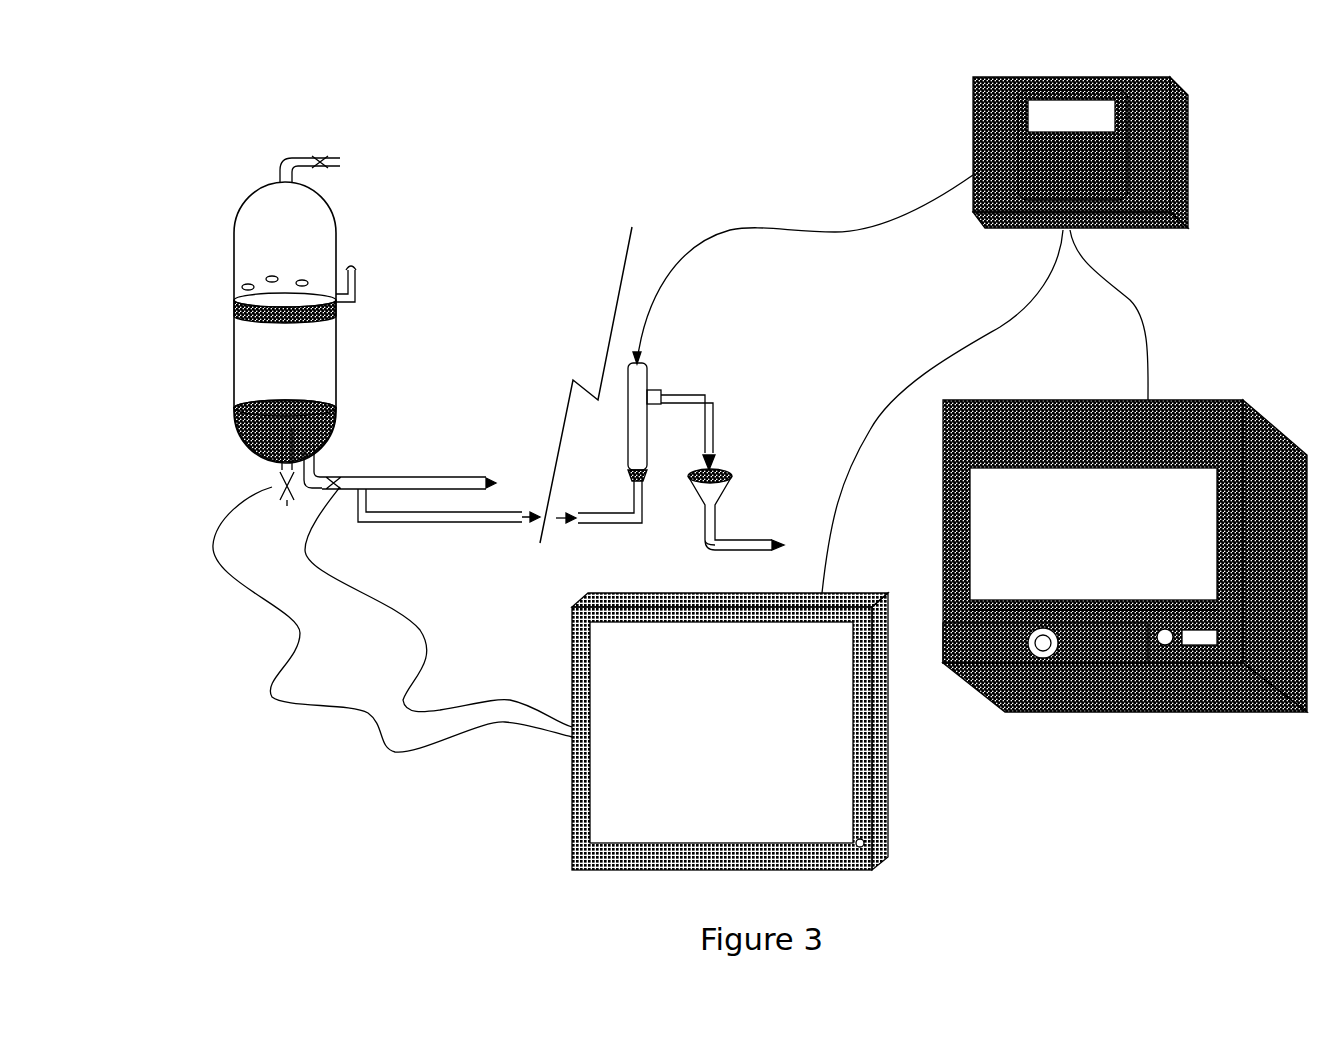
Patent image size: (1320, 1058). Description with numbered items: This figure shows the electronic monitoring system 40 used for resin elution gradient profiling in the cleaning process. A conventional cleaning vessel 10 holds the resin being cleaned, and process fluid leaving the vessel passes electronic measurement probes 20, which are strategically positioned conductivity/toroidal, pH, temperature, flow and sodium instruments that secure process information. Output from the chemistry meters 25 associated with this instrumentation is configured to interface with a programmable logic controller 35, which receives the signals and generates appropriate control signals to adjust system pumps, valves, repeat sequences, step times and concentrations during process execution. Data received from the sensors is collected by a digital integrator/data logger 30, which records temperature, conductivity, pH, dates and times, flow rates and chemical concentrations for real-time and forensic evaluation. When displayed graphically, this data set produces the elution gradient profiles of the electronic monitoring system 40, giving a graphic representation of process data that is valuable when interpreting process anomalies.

The conventional cleaning vessel 10 is at (270, 357).
The electronic measurement probes 20 is at (656, 398).
The chemistry meters 25 is at (1157, 118).
The digital integrator/data logger 30 is at (1215, 693).
The programmable logic controller 35 is at (880, 806).
The electronic monitoring system 40 is at (378, 97).